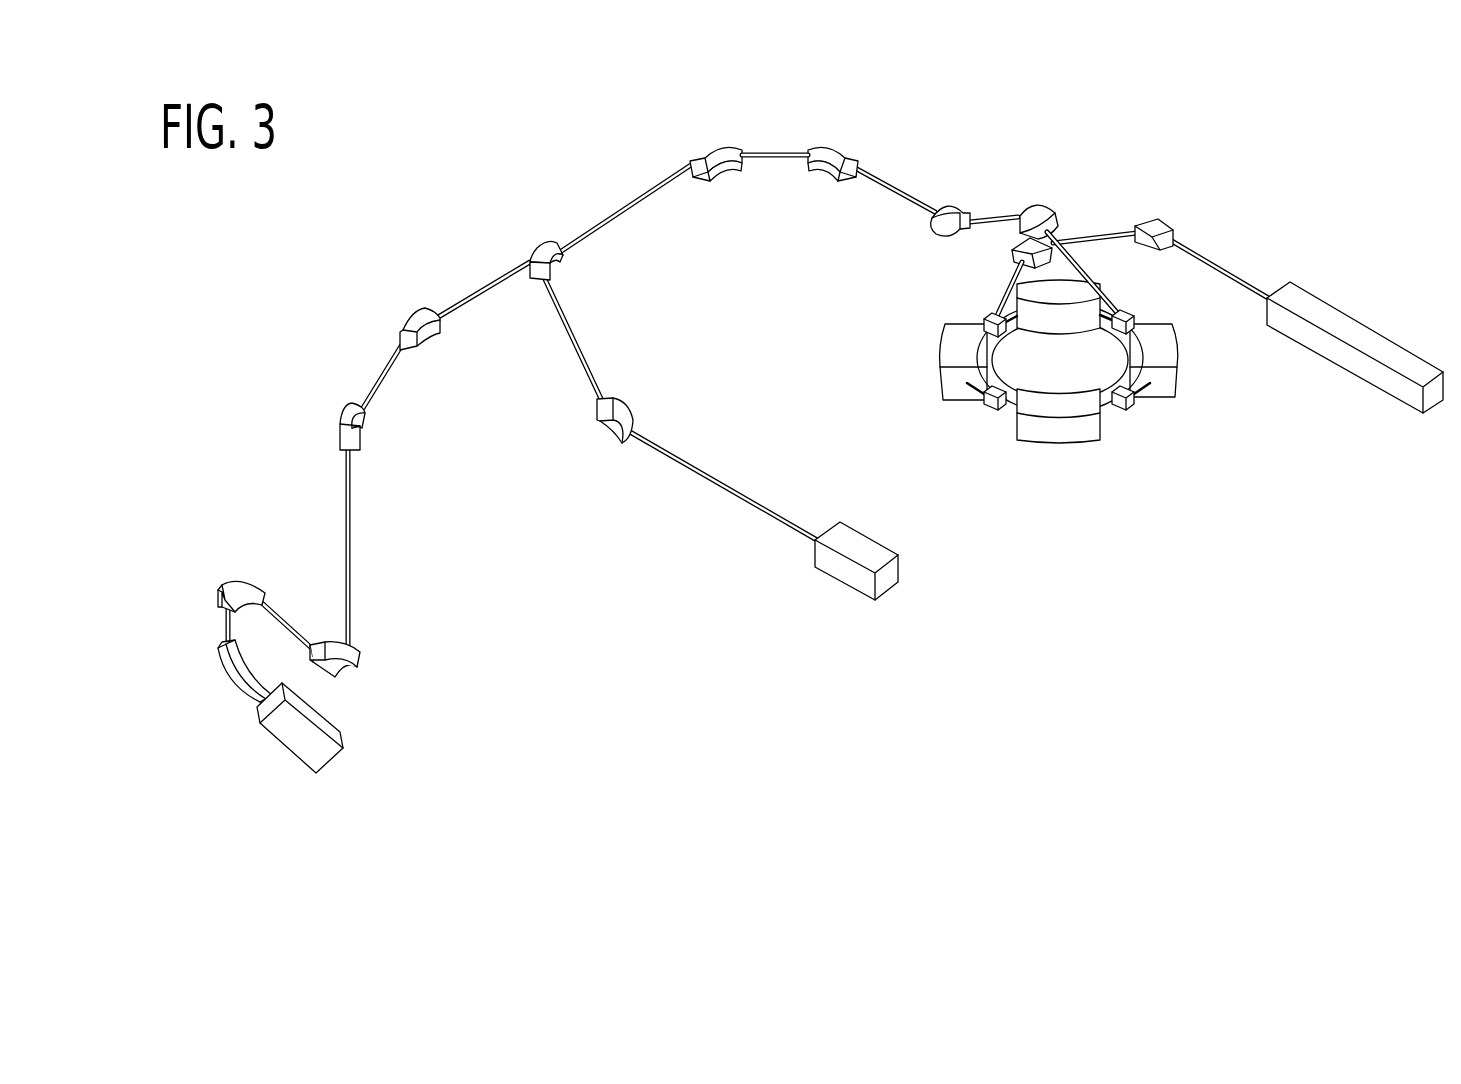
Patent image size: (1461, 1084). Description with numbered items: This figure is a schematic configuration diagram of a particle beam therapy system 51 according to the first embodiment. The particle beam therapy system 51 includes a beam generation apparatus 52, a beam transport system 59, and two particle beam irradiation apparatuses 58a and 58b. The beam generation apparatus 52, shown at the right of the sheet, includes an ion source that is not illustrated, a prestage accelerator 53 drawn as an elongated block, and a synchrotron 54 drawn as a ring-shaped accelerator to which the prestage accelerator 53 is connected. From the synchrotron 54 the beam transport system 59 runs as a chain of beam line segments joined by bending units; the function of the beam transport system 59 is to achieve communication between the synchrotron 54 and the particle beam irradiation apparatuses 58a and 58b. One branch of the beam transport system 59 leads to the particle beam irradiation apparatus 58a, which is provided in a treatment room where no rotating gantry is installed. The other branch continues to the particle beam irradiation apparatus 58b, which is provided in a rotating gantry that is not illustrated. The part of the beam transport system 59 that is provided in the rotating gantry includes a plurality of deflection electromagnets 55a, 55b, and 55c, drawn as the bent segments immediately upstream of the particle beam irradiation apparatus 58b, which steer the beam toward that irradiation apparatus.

The particle beam therapy system 51 is at (287, 226).
The beam generation apparatus 52 is at (1350, 507).
The prestage accelerator 53 is at (1357, 380).
The synchrotron 54 is at (1150, 403).
The deflection electromagnet 55a is at (360, 653).
The deflection electromagnet 55b is at (240, 580).
The deflection electromagnet 55c is at (213, 673).
The particle beam irradiation apparatus 58a is at (833, 568).
The particle beam irradiation apparatus 58b is at (290, 750).
The beam transport system 59 is at (767, 158).